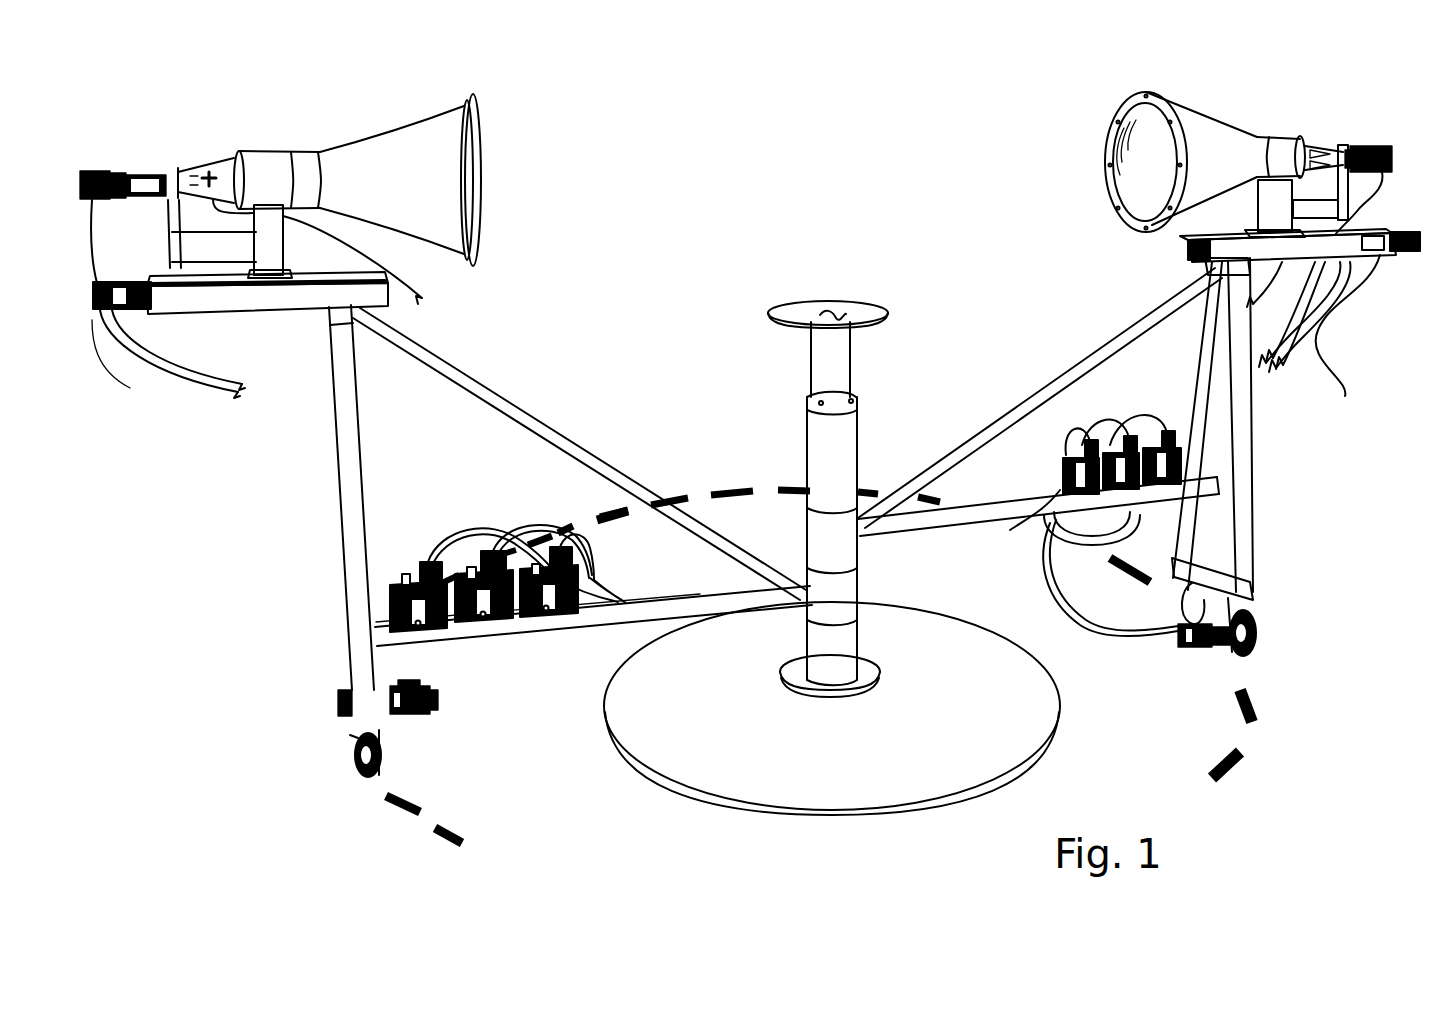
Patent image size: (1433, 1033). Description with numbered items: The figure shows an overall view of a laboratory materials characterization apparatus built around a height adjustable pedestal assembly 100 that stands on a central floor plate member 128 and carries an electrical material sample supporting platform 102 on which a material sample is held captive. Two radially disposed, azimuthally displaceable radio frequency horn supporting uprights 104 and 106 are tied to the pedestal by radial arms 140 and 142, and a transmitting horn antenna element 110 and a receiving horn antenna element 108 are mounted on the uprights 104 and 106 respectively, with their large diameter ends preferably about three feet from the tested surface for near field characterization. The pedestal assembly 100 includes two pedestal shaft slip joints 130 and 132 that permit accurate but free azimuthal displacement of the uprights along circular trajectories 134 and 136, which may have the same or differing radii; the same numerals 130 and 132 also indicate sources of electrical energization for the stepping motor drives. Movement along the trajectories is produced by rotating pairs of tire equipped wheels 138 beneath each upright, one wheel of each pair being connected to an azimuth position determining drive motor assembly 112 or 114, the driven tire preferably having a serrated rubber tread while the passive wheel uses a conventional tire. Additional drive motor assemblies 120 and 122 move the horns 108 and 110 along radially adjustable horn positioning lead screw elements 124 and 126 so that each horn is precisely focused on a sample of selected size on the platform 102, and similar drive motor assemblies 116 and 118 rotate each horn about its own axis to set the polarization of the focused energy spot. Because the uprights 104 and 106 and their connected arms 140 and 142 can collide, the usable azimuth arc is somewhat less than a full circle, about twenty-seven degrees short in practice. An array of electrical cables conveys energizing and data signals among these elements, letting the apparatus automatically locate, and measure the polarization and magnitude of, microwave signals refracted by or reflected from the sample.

The height adjustable pedestal assembly 100 is at (857, 428).
The electrical material sample supporting platform 102 is at (836, 305).
The radio frequency horn supporting upright 104 is at (345, 650).
The radio frequency horn supporting upright 106 is at (1255, 535).
The receiving horn antenna element 108 is at (1200, 118).
The transmitting horn antenna element 110 is at (415, 135).
The azimuth position determining drive motor assembly 112 is at (422, 712).
The azimuth position determining drive motor assembly 114 is at (1200, 648).
The drive motor assembly 116 is at (1367, 148).
The drive motor assembly 118 is at (98, 172).
The drive motor assembly 120 is at (92, 320).
The drive motor assembly 122 is at (1406, 254).
The radially adjustable radio frequency horn positioning lead screw element 124 is at (318, 280).
The radially adjustable radio frequency horn positioning lead screw element 126 is at (1270, 137).
The central floor plate member 128 is at (705, 785).
The pedestal shaft slip joint 130 is at (586, 578).
The pedestal shaft slip joint 132 is at (858, 590).
The circular trajectory 134 is at (592, 508).
The circular trajectory 136 is at (1242, 765).
The tire equipped wheel 138 is at (352, 765).
The radial arm 140 is at (648, 600).
The radial arm 142 is at (890, 538).